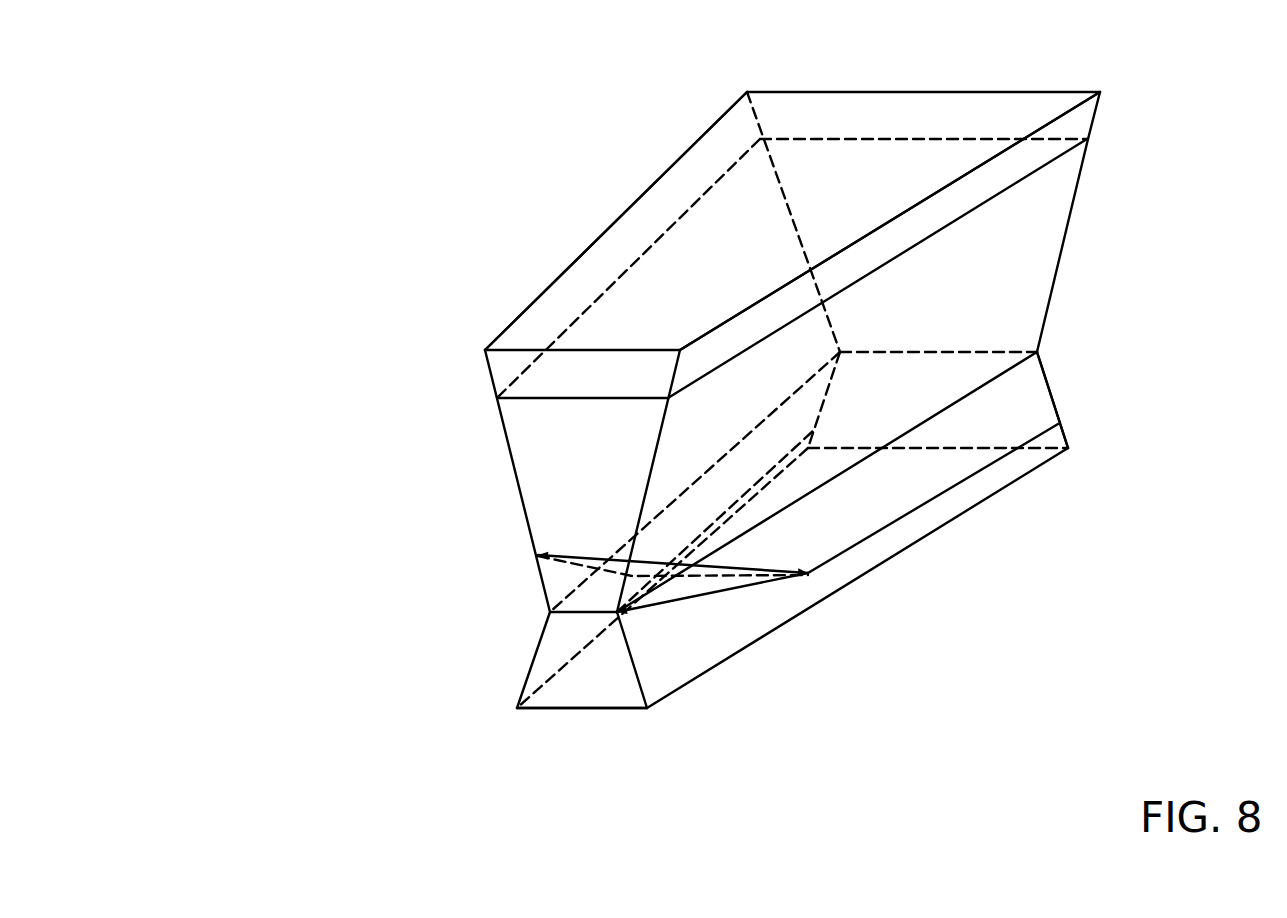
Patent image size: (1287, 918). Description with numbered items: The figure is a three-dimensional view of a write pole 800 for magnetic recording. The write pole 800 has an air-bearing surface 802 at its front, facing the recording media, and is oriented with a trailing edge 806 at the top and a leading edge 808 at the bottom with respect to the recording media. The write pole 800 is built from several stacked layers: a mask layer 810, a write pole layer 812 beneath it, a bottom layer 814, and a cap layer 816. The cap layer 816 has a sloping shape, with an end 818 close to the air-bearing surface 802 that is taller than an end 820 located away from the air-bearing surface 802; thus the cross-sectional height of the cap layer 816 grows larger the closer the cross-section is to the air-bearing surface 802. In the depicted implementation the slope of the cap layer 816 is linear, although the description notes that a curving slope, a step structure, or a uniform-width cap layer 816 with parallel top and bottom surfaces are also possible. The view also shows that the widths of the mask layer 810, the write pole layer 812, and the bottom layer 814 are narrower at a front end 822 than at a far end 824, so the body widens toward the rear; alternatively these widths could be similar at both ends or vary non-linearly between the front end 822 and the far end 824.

The write pole 800 is at (222, 94).
The air-bearing surface 802 is at (533, 483).
The trailing edge 806 is at (393, 352).
The leading edge 808 is at (402, 708).
The mask layer 810 is at (1097, 118).
The write pole layer 812 is at (1065, 242).
The bottom layer 814 is at (1065, 433).
The cap layer 816 is at (686, 594).
The end of cap layer closer to the ABS 818 is at (543, 587).
The end of cap layer away from the ABS 820 is at (812, 590).
The front end 822 is at (570, 754).
The far end 824 is at (1103, 396).